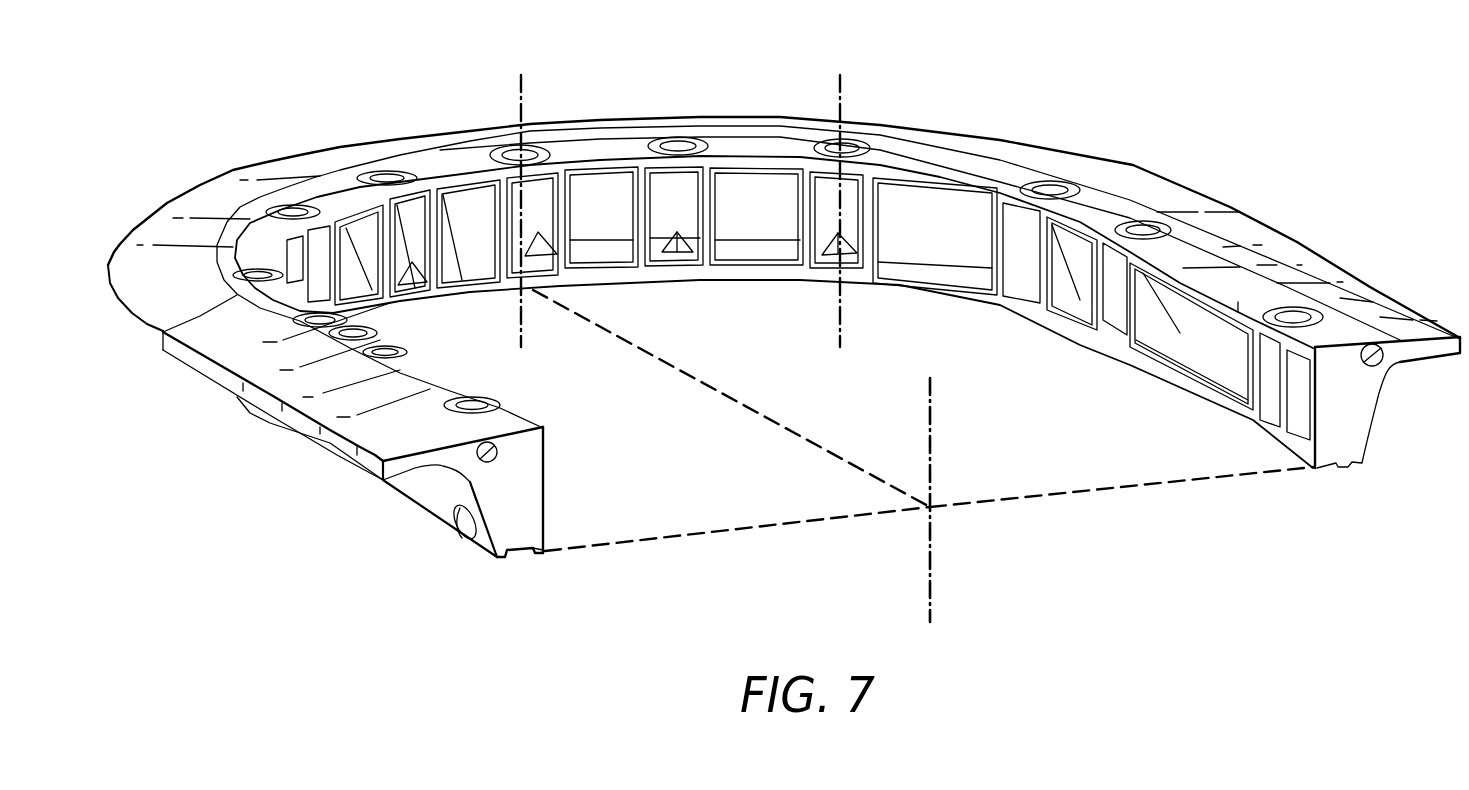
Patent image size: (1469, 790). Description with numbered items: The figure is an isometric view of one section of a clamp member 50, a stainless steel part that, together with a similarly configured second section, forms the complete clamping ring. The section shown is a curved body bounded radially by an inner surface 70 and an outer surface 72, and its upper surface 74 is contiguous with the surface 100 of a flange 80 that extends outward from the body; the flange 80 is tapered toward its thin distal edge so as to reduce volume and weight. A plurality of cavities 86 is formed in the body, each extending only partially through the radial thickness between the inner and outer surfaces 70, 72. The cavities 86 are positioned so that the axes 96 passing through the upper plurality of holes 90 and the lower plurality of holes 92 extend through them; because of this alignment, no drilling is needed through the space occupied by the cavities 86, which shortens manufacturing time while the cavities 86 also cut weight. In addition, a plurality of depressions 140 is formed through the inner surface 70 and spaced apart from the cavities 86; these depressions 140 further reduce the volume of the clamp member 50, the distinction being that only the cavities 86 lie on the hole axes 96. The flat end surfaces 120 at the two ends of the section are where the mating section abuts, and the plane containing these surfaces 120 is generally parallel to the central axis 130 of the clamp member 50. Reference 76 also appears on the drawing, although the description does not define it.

The clamp member 50 is at (307, 570).
The inner surface 70 is at (545, 512).
The outer surface 72 is at (490, 547).
The upper surface 74 is at (518, 412).
The bottom notch 76 is at (537, 547).
The flange 80 is at (412, 468).
The cavities 86 is at (430, 290).
The upper plurality of holes 90 is at (680, 147).
The lower plurality of holes 92 is at (418, 258).
The axes 96 is at (521, 92).
The surface of the flange 100 is at (363, 428).
The surfaces 120 is at (1350, 404).
The central axis 130 is at (930, 570).
The depressions 140 is at (470, 210).